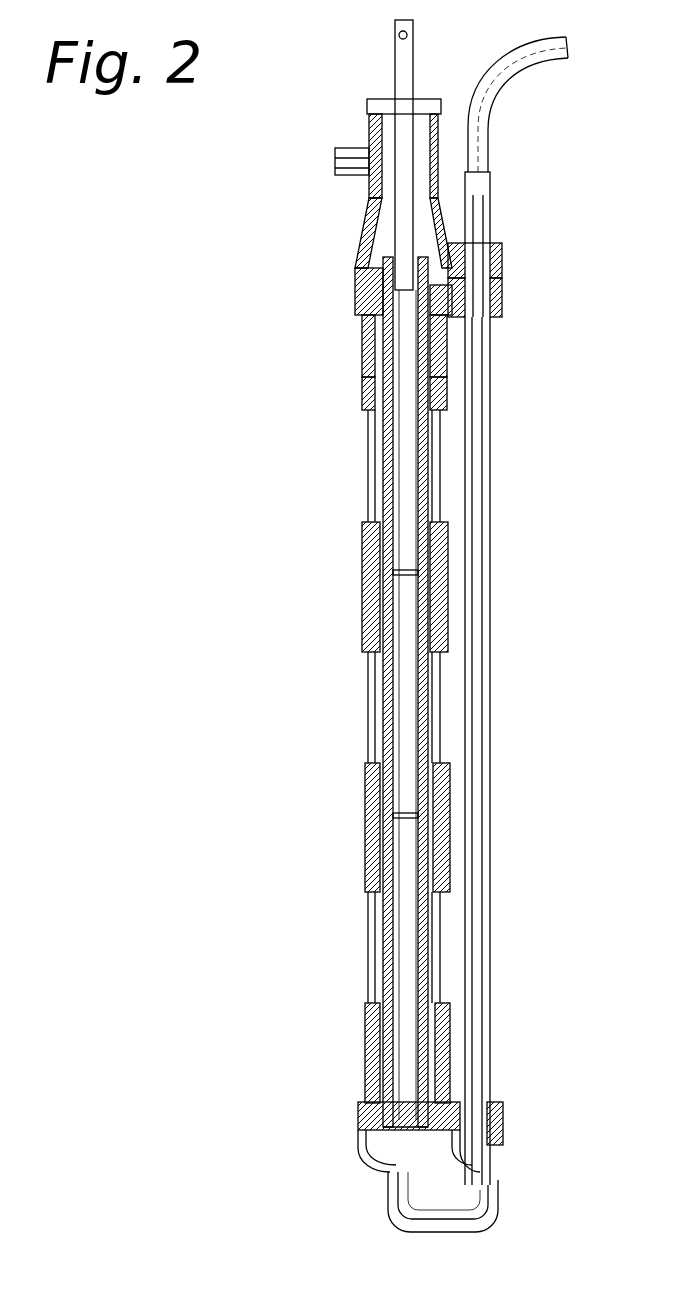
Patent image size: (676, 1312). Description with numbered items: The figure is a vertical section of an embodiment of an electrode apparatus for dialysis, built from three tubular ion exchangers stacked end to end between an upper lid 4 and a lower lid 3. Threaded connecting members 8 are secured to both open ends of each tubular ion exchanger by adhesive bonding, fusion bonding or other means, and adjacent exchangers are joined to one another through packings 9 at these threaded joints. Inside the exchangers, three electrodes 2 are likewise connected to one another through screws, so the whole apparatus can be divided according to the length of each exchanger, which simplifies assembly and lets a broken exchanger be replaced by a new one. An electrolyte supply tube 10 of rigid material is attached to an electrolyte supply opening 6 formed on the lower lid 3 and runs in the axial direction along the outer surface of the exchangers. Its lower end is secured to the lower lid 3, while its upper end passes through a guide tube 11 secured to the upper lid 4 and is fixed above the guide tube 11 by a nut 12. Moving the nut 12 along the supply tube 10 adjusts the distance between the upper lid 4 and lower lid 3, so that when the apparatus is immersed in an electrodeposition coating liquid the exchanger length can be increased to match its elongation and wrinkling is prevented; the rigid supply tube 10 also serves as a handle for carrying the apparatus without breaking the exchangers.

The electrode 2 is at (372, 698).
The lower lid 3 is at (358, 1128).
The upper lid 4 is at (368, 137).
The electrolyte supply opening 6 is at (388, 1200).
The connecting member 8 is at (362, 395).
The packing 9 is at (365, 362).
The electrolyte supply tube 10 is at (492, 383).
The guide tube 11 is at (502, 294).
The nut 12 is at (502, 248).